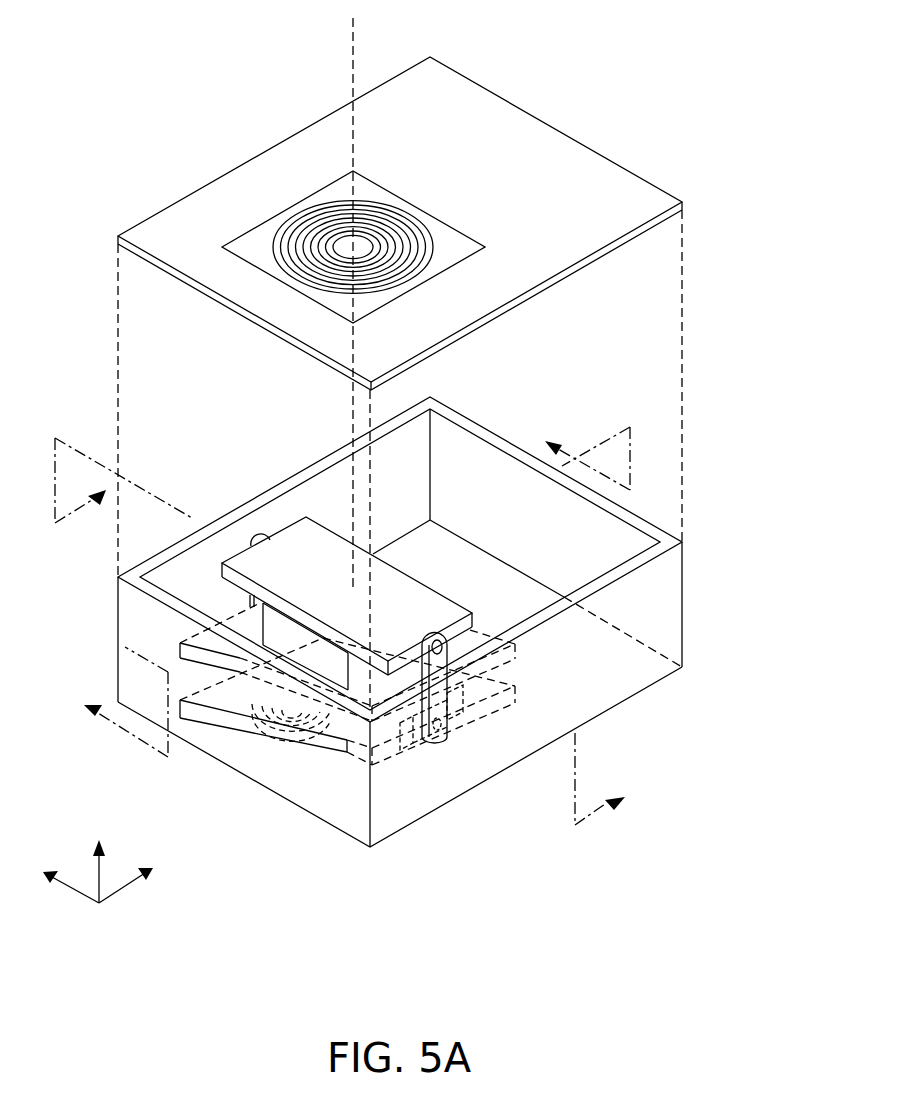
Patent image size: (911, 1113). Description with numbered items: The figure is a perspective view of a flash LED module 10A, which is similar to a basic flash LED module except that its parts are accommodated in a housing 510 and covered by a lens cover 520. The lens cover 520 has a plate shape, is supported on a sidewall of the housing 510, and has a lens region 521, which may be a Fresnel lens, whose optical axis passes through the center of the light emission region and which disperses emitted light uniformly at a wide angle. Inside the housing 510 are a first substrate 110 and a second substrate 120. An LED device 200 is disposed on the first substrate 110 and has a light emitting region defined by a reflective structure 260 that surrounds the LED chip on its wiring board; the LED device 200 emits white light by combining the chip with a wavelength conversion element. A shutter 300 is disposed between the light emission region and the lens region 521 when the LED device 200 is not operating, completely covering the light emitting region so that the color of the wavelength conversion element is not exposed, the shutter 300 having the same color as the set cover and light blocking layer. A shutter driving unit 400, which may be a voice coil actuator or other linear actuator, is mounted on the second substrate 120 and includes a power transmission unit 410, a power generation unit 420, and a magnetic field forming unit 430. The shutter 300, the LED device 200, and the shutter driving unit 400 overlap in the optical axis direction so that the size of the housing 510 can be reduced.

The flash LED module 10A is at (138, 104).
The lens cover 520 is at (666, 201).
The lens region 521 is at (250, 237).
The housing 510 is at (666, 608).
The shutter 300 is at (287, 543).
The reflective structure 260 is at (263, 625).
The LED device 200 is at (242, 605).
The first substrate 110 is at (180, 648).
The second substrate 120 is at (215, 710).
The magnetic field forming unit 430 is at (320, 757).
The power generation unit 420 is at (408, 748).
The power transmission unit 410 is at (435, 740).
The shutter driving unit 400 is at (455, 915).